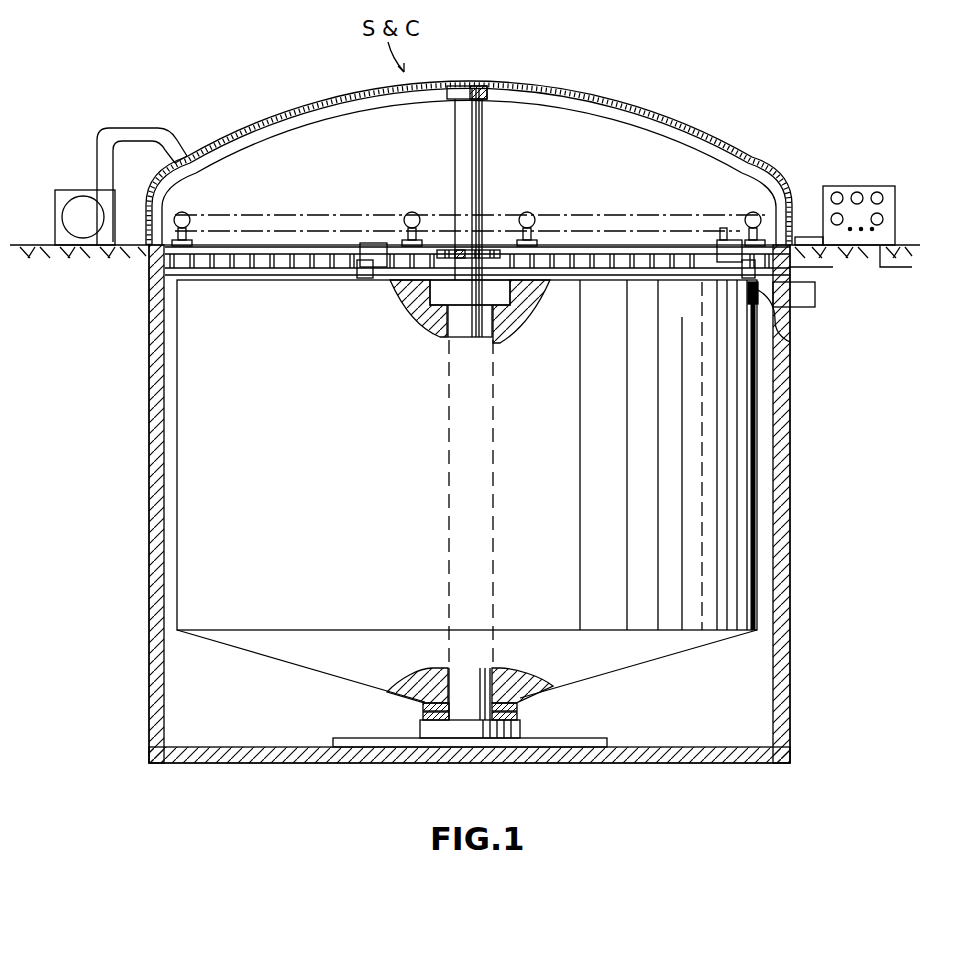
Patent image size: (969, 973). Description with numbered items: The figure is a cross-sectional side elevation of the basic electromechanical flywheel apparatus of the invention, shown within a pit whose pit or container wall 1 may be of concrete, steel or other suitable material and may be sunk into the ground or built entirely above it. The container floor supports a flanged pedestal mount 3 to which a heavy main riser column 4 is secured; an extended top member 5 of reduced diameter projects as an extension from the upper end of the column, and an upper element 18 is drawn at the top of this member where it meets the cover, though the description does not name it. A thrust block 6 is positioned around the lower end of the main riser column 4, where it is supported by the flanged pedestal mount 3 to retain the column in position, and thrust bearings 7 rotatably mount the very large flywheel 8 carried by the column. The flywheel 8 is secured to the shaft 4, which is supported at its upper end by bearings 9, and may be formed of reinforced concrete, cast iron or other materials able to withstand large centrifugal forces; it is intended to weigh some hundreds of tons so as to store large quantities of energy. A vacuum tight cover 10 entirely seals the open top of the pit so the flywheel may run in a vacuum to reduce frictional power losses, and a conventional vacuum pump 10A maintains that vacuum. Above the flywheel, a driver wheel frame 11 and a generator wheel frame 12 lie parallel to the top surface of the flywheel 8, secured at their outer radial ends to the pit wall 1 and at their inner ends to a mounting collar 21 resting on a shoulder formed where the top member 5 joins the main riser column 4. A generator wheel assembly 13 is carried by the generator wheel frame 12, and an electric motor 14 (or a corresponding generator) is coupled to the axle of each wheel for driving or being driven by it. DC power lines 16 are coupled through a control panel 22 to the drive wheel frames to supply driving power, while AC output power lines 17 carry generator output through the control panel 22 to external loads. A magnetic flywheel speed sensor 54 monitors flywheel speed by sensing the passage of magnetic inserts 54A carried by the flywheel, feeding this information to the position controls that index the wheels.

The pit or container wall 1 is at (792, 512).
The flanged pedestal mount 3 is at (567, 738).
The main riser column 4 is at (449, 502).
The extended top member 5 is at (483, 158).
The thrust block 6 is at (420, 730).
The thrust bearings 7 is at (515, 712).
The flywheel 8 is at (545, 451).
The bearings 9 is at (432, 312).
The vacuum tight cover 10 is at (298, 110).
The vacuum pump 10A is at (101, 229).
The driver wheel frame 11 is at (285, 243).
The generator wheel frame 12 is at (628, 245).
The generator wheel assembly 13 is at (722, 262).
The electric motor 14 is at (373, 280).
The DC power lines 16 is at (812, 237).
The AC output power lines 17 is at (885, 268).
The top bearing 18 is at (478, 92).
The mounting collar 21 is at (485, 250).
The control panel 22 is at (848, 186).
The magnetic flywheel speed sensor 54 is at (815, 296).
The magnetic inserts 54A is at (791, 319).